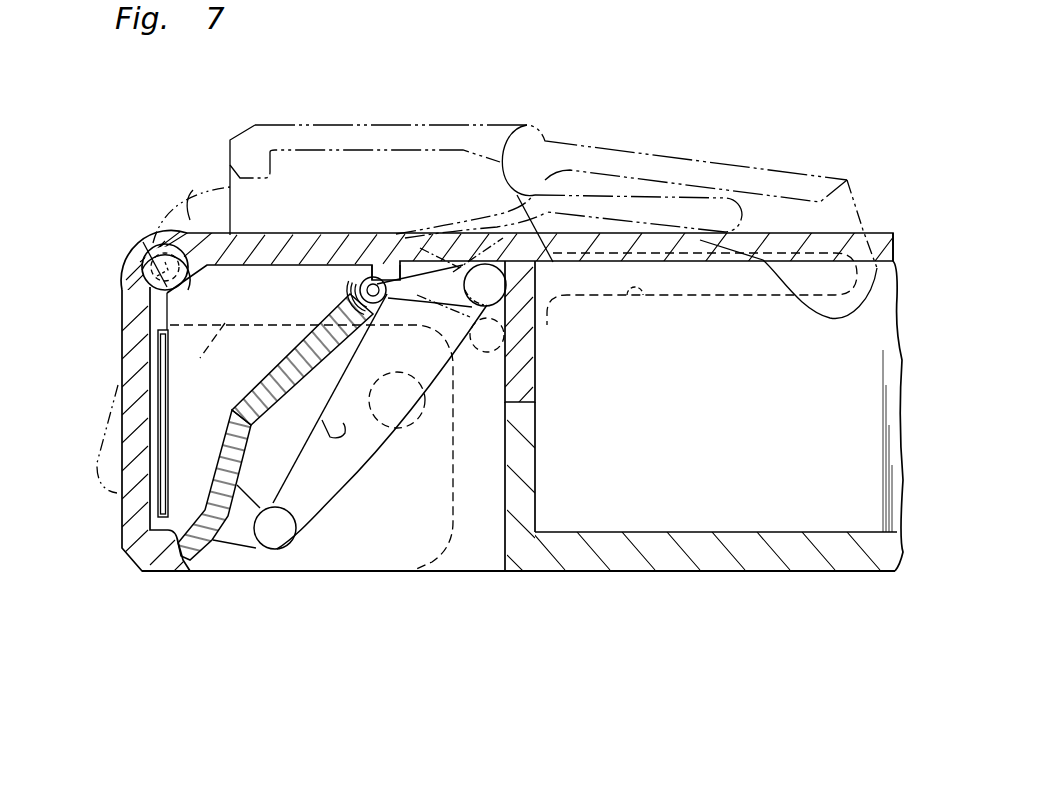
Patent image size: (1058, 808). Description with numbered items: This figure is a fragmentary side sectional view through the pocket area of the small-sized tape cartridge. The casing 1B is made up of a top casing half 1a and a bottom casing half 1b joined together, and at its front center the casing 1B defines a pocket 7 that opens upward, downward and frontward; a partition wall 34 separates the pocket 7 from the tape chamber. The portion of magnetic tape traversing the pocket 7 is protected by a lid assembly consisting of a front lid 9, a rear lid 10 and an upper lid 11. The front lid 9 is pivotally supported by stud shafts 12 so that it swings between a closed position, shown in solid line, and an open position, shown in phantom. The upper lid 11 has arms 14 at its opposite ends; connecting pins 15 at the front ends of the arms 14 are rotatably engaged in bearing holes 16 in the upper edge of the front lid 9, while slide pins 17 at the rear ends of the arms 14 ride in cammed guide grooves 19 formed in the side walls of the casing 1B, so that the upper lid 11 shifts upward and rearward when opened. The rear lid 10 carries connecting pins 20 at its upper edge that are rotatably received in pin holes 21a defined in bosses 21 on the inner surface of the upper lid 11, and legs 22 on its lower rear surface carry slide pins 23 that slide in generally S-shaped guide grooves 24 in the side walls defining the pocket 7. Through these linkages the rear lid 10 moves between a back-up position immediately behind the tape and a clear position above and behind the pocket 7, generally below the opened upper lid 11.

The top casing half 1a is at (792, 242).
The casing 1B is at (886, 226).
The bottom casing half 1b is at (760, 574).
The pocket 7 is at (370, 530).
The front lid 9 is at (120, 504).
The rear lid 10 is at (267, 407).
The upper lid 11 is at (285, 235).
The stud shafts 12 is at (400, 430).
The arms 14 is at (222, 330).
The connecting pins 15 is at (143, 242).
The bearing holes 16 is at (142, 276).
The slide pins 17 is at (482, 355).
The cammed guide grooves 19 is at (643, 298).
The connecting pins 20 is at (463, 283).
The bosses 21 is at (355, 278).
The pin holes 21a is at (380, 266).
The legs 22 is at (232, 552).
The slide pins 23 is at (277, 550).
The S-shaped guide grooves 24 is at (322, 420).
The partition wall 34 is at (537, 428).